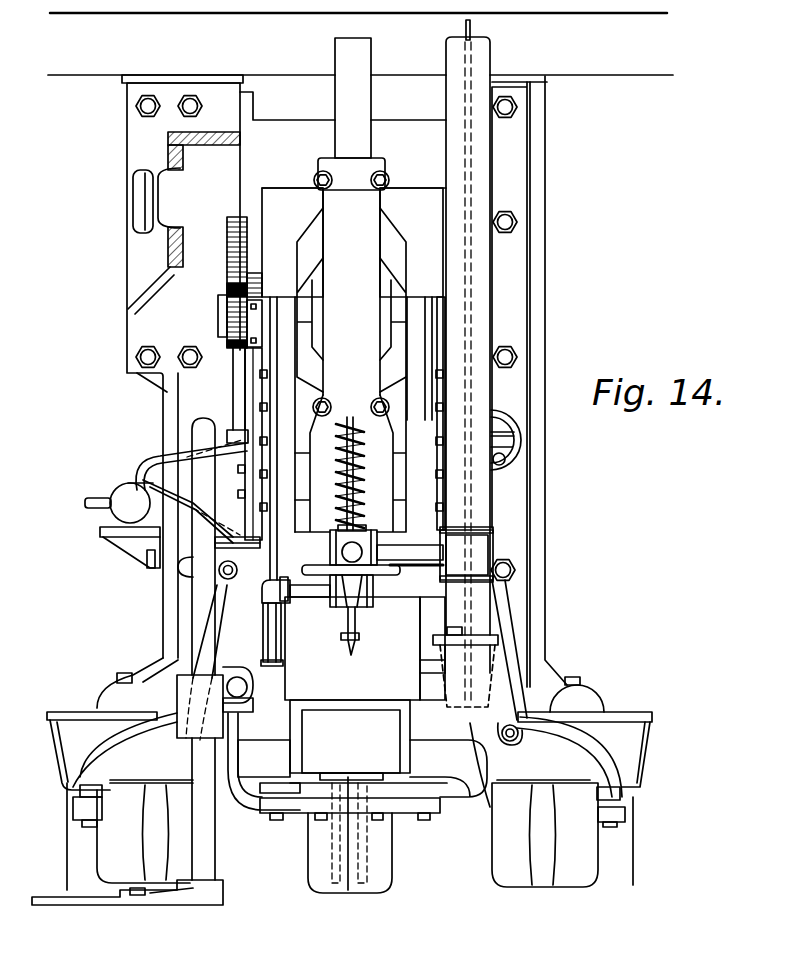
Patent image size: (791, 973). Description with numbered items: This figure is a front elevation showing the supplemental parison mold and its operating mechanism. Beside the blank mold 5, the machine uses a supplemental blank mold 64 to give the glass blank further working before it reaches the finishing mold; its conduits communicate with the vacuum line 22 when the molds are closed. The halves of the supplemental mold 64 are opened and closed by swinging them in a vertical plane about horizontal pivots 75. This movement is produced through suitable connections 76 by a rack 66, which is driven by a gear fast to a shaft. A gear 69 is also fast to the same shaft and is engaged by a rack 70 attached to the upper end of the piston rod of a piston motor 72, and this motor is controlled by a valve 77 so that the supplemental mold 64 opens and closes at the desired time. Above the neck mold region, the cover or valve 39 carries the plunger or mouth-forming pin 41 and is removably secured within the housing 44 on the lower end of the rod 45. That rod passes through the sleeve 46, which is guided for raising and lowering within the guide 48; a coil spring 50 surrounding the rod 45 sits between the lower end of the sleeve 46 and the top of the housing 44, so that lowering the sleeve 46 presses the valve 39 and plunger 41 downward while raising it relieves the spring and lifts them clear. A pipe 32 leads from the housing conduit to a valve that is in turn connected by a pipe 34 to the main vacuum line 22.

The blank mold 5 is at (120, 875).
The vacuum line 22 is at (483, 307).
The pipe 32 is at (263, 622).
The pipe 34 is at (413, 567).
The cover or valve 39 is at (313, 573).
The plunger or mouth-forming pin 41 is at (357, 622).
The housing 44 is at (342, 532).
The rod 45 is at (362, 496).
The sleeve 46 is at (342, 552).
The guide 48 is at (352, 345).
The coil spring 50 is at (363, 460).
The supplemental blank mold 64 is at (390, 867).
The rack 66 is at (253, 387).
The gear 69 is at (227, 316).
The rack 70 is at (227, 253).
The piston motor 72 is at (220, 470).
The horizontal pivots 75 is at (247, 688).
The connections 76 is at (226, 627).
The valve 77 is at (122, 498).